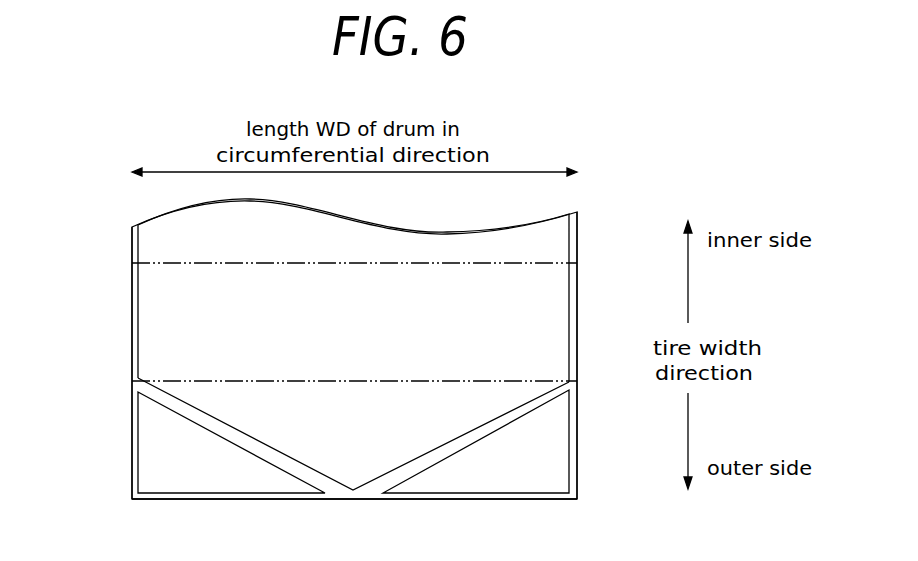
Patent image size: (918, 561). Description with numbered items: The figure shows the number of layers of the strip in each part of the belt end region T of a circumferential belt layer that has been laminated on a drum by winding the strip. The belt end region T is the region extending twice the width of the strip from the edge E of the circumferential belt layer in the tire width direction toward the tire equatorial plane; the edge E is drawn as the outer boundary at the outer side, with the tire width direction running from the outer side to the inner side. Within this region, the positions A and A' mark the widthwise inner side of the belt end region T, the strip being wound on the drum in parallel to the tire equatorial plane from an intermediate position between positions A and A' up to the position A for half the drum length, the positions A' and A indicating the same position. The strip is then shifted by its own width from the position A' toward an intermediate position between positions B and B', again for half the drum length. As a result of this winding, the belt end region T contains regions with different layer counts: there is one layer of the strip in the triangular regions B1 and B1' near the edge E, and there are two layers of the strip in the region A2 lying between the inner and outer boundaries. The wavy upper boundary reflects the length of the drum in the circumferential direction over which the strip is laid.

The belt end region T is at (63, 264).
The region A2 is at (369, 350).
The region B1 is at (476, 441).
The region B1' is at (231, 442).
The position A is at (597, 296).
The position A' is at (107, 304).
The position B is at (597, 440).
The position B' is at (107, 440).
The edge E is at (577, 497).